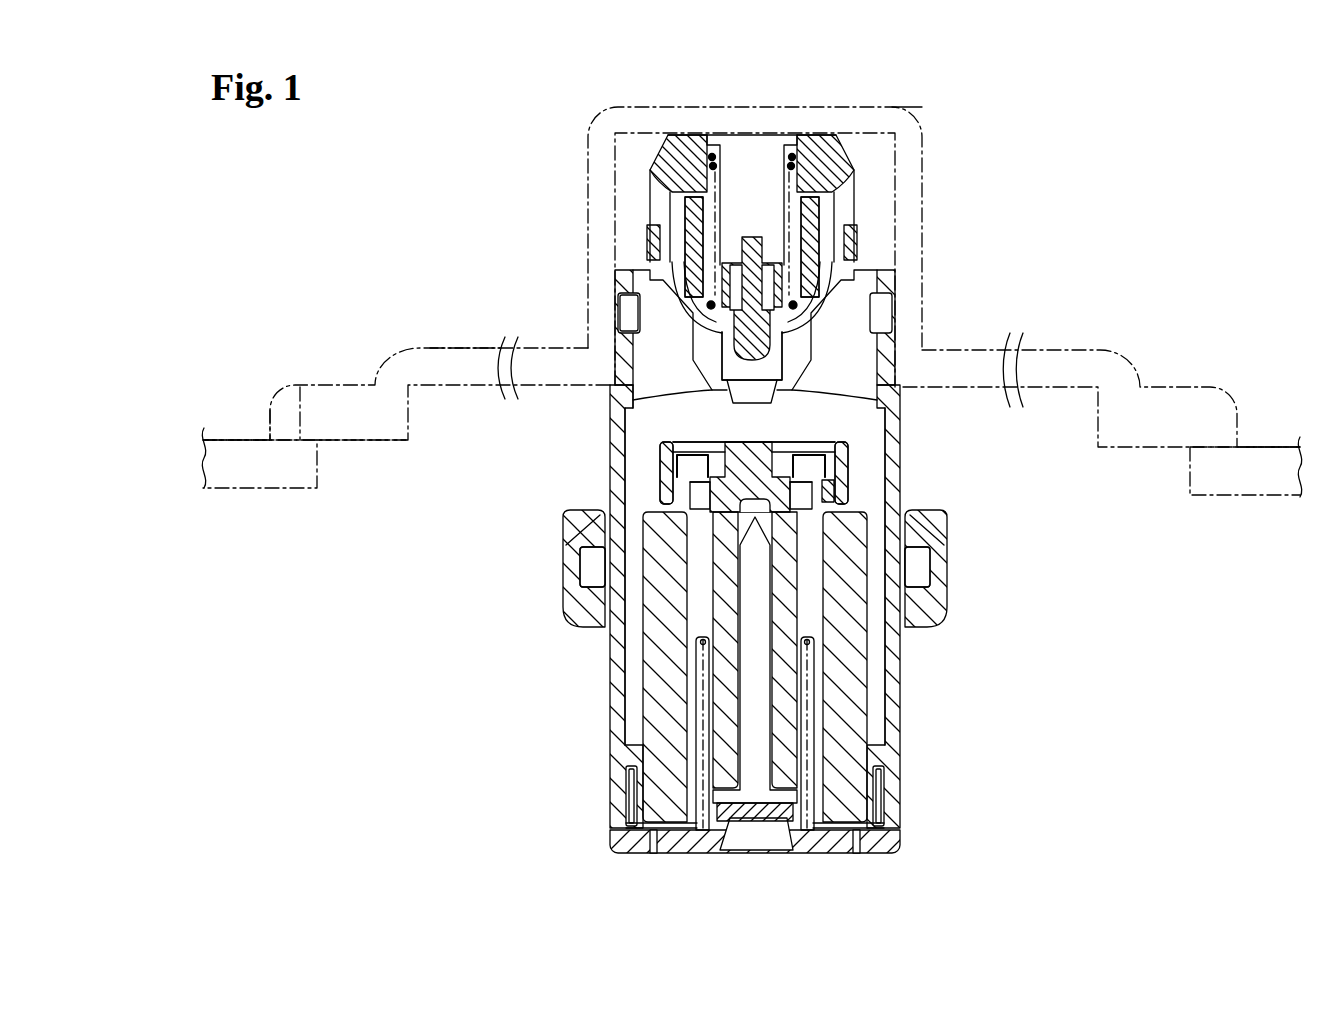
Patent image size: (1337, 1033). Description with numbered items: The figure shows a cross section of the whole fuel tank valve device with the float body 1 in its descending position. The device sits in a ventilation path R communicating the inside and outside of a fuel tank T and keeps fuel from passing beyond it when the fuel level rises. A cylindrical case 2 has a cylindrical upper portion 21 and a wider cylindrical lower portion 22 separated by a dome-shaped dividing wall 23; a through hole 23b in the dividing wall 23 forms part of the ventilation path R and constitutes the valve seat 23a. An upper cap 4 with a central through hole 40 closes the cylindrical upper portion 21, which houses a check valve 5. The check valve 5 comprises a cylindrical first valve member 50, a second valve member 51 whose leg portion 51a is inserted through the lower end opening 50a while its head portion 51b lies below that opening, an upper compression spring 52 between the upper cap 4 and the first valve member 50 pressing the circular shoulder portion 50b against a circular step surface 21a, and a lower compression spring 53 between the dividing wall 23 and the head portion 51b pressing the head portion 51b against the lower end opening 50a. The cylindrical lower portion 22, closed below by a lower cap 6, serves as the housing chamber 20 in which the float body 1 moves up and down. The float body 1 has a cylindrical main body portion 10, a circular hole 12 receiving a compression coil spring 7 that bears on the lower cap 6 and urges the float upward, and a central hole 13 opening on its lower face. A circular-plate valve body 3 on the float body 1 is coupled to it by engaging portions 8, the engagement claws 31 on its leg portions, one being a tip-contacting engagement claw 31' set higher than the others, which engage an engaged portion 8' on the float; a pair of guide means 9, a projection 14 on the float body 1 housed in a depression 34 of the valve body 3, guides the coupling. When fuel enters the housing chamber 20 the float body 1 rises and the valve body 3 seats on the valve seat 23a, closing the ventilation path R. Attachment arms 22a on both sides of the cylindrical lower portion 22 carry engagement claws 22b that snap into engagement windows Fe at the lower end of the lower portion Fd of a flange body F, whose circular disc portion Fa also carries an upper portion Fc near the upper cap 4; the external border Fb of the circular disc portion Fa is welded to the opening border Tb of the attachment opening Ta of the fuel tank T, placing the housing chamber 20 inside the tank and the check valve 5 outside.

The float body 1 is at (857, 652).
The cylindrical case 2 is at (615, 660).
The valve body 3 is at (850, 470).
The upper cap 4 is at (827, 150).
The check valve 5 is at (820, 215).
The first valve member 50 is at (839, 245).
The lower cap 6 is at (900, 848).
The compression coil spring 7 is at (813, 722).
The engaging portions 8 is at (861, 500).
The engaged portions 8' is at (913, 502).
The guide means 9 is at (960, 405).
The main body portion 10 is at (857, 690).
The circular hole 12 is at (695, 722).
The central hole 13 is at (762, 752).
The projection 14 is at (862, 418).
The housing chamber 20 is at (633, 688).
The cylindrical upper portion 21 is at (850, 268).
The circular step surface 21a is at (800, 305).
The cylindrical lower portion 22 is at (618, 782).
The attachment arms 22a is at (575, 570).
The engagement claws 22b is at (585, 535).
The dividing wall 23 is at (880, 285).
The valve seat 23a is at (700, 410).
The through hole 23b is at (628, 400).
The engagement claws 31 is at (861, 500).
The tip-contacting engagement claw 31' is at (867, 500).
The depression 34 is at (860, 450).
The through hole 40 is at (770, 155).
The lower end opening 50a is at (712, 153).
The circular shoulder portion 50b is at (618, 293).
The second valve member 51 is at (762, 265).
The leg portion 51a is at (784, 218).
The head portion 51b is at (790, 345).
The upper compression spring 52 is at (845, 160).
The lower compression spring 53 is at (690, 357).
The flange body F is at (412, 348).
The circular disc portion Fa is at (465, 347).
The external border Fb is at (278, 423).
The upper portion Fc is at (588, 155).
The lower portion Fd is at (650, 440).
The engagement windows Fe is at (605, 500).
The ventilation path R is at (723, 265).
The fuel tank T is at (293, 490).
The attachment opening Ta is at (353, 463).
The opening border Tb is at (300, 387).